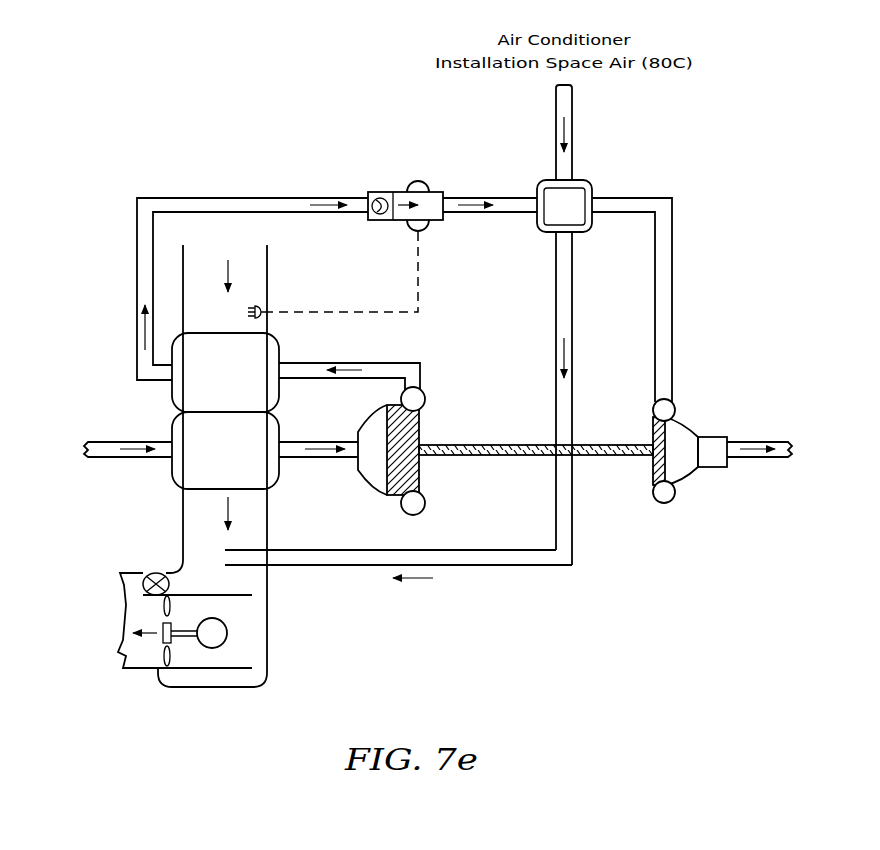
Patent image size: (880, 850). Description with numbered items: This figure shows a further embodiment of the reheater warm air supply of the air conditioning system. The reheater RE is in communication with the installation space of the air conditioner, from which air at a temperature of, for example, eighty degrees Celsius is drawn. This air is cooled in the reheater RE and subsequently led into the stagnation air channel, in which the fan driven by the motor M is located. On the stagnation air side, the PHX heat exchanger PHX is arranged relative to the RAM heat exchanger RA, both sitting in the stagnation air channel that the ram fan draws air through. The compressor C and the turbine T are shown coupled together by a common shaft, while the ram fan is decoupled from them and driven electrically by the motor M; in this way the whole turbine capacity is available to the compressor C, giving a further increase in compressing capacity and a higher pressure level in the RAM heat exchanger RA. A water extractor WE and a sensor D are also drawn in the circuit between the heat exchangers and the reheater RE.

The RAM heat exchanger RA is at (225, 372).
The PHX heat exchanger PHX is at (225, 450).
The reheater RE is at (564, 206).
The water extractor WE is at (355, 240).
The sensor D is at (257, 312).
The compressor C is at (391, 467).
The turbine T is at (690, 467).
The motor M is at (185, 619).